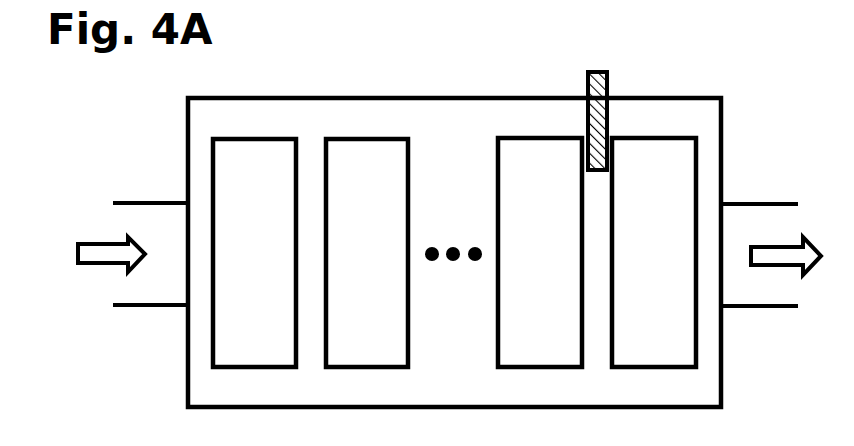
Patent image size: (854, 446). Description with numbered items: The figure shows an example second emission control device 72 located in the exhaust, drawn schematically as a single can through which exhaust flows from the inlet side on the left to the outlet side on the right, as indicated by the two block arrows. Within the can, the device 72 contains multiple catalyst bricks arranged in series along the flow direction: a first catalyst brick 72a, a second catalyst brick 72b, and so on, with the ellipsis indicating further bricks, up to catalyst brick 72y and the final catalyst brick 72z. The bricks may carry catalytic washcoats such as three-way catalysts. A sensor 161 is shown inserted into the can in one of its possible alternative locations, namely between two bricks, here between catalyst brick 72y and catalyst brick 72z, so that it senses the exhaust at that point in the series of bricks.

The second emission control device 72 is at (667, 97).
The catalyst brick 72a is at (227, 135).
The catalyst brick 72b is at (340, 135).
The catalyst brick 72y is at (513, 137).
The catalyst brick 72z is at (627, 137).
The sensor 161 is at (587, 83).